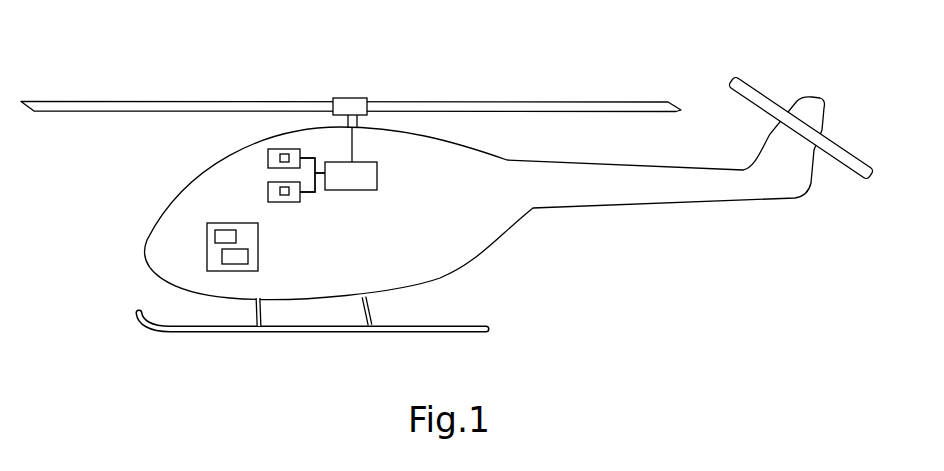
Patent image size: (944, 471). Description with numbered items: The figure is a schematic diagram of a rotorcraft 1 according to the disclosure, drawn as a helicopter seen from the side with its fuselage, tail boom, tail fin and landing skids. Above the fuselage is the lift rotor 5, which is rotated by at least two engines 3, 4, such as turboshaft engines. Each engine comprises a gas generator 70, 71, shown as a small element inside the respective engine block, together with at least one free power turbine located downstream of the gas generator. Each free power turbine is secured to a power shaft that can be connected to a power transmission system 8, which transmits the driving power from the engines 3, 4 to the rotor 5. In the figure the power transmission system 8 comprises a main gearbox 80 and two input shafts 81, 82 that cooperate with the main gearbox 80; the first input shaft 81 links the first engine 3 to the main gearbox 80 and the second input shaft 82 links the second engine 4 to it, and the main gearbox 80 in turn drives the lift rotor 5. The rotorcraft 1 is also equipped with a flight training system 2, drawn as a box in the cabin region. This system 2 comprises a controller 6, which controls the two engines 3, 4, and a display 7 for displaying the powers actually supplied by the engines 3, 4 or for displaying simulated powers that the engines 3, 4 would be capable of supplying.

The rotorcraft 1 is at (553, 275).
The flight training system 2 is at (207, 229).
The first engine 3 is at (268, 160).
The second engine 4 is at (268, 192).
The lift rotor 5 is at (508, 94).
The controller 6 is at (215, 237).
The display 7 is at (222, 258).
The power transmission system 8 is at (360, 205).
The gas generator of first engine 70 is at (285, 150).
The gas generator of second engine 71 is at (285, 202).
The main gearbox 80 is at (377, 173).
The first input shaft 81 is at (315, 158).
The second input shaft 82 is at (308, 195).